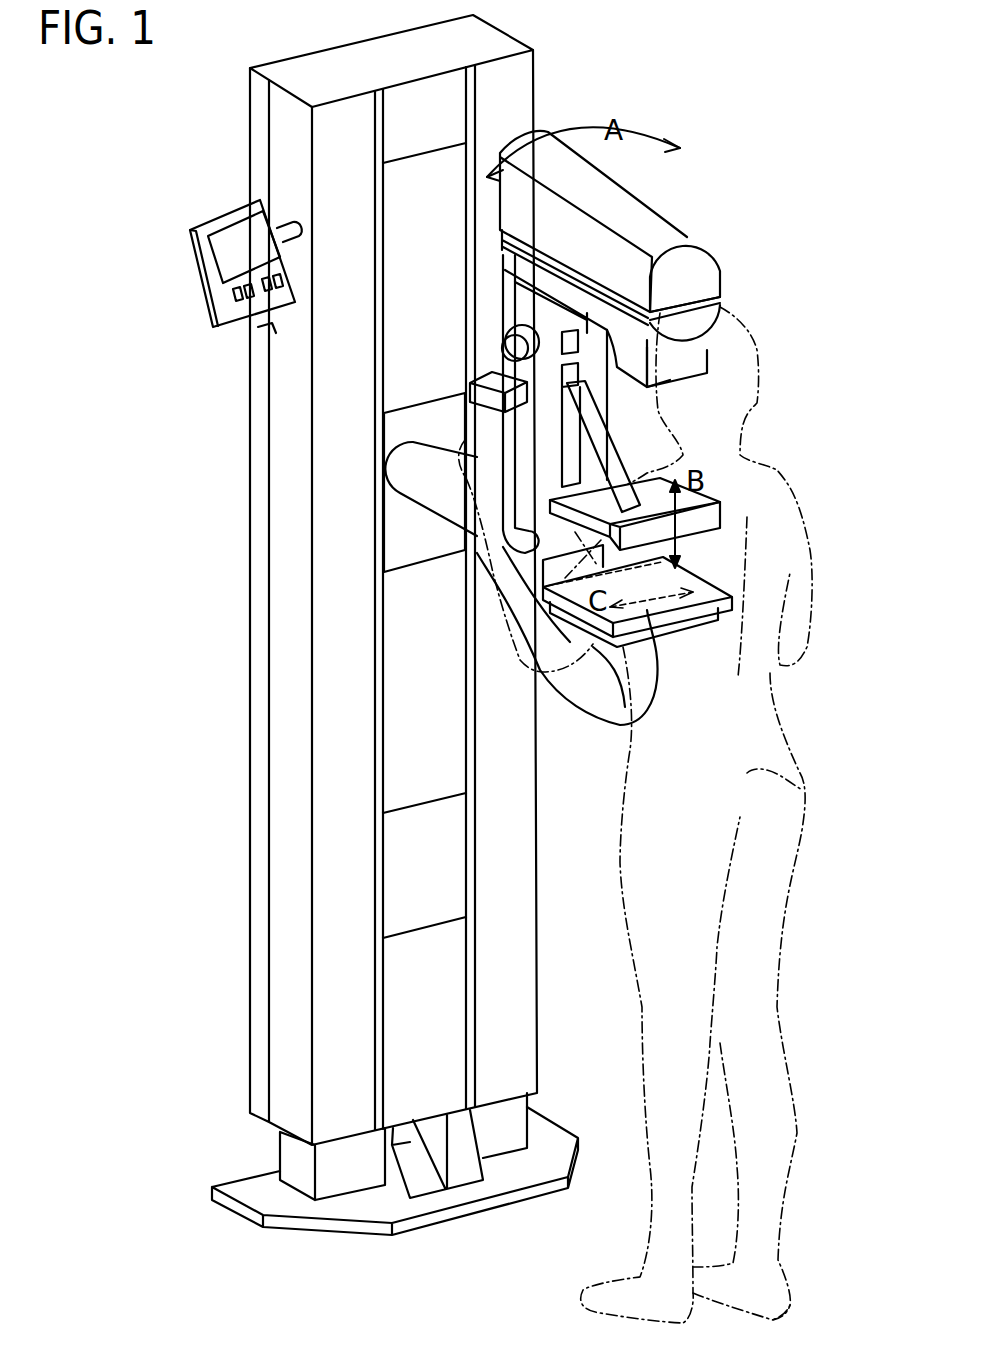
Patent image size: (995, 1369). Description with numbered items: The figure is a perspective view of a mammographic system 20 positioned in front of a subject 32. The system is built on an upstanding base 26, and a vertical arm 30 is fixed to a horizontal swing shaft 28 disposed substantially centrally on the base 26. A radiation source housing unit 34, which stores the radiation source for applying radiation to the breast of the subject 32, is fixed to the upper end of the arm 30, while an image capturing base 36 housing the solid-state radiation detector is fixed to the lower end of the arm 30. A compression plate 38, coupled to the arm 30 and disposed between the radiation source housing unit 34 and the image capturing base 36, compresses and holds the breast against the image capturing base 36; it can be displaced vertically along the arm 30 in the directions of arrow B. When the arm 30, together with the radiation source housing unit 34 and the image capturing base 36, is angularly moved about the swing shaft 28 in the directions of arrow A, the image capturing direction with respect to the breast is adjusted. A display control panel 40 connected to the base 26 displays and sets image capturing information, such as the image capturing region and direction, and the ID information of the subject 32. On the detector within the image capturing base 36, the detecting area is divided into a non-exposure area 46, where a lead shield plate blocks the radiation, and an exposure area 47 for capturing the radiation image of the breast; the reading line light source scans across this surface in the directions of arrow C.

The mammographic system 20 is at (822, 165).
The base 26 is at (300, 857).
The swing shaft 28 is at (430, 458).
The arm 30 is at (537, 311).
The subject 32 is at (807, 794).
The radiation source housing unit 34 is at (700, 273).
The image capturing base 36 is at (643, 610).
The compression plate 38 is at (717, 515).
The display control panel 40 is at (228, 260).
The non-exposure area 46 is at (592, 566).
The exposure area 47 is at (642, 560).